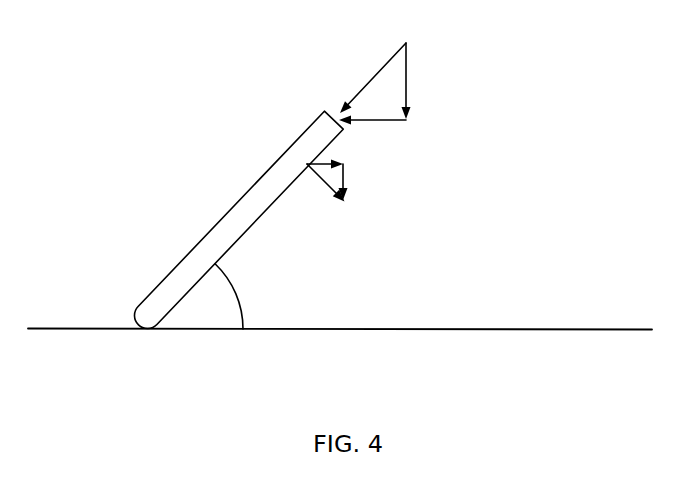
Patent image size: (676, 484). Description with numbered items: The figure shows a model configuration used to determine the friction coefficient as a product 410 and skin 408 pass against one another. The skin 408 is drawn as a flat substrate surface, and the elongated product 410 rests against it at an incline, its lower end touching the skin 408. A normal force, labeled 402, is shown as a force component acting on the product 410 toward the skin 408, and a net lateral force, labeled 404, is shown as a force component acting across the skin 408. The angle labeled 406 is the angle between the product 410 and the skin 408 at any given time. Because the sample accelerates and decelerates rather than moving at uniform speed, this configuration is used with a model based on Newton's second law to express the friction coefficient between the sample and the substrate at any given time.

The normal force F_N 402 is at (356, 69).
The lateral force F_L 404 is at (313, 196).
The angle alpha 406 is at (233, 290).
The skin 408 is at (498, 330).
The product 410 is at (214, 203).